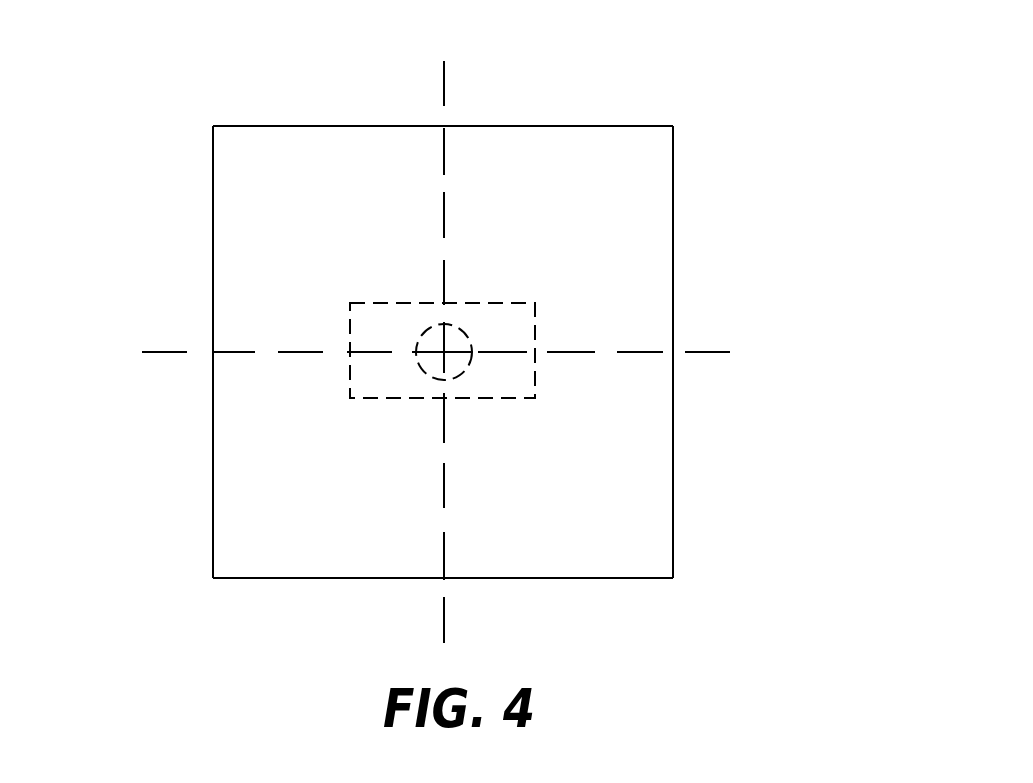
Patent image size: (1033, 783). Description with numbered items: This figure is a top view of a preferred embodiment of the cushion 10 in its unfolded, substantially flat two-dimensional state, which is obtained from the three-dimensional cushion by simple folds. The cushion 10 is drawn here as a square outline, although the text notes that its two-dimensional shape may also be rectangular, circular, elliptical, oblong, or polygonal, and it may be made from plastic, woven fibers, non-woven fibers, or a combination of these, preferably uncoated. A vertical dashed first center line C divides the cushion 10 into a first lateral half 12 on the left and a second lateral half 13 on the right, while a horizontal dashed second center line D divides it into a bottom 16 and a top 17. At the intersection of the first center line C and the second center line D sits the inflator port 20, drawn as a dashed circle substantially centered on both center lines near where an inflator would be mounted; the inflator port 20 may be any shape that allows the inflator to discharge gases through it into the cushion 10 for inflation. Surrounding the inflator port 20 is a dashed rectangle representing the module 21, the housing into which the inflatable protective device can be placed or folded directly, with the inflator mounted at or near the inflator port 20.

The cushion 10 is at (478, 333).
The first lateral half 12 is at (255, 352).
The second lateral half 13 is at (774, 352).
The bottom 16 is at (442, 493).
The top 17 is at (445, 202).
The inflator port 20 is at (470, 365).
The module 21 is at (510, 400).
The first center line C is at (446, 321).
The second center line D is at (502, 359).